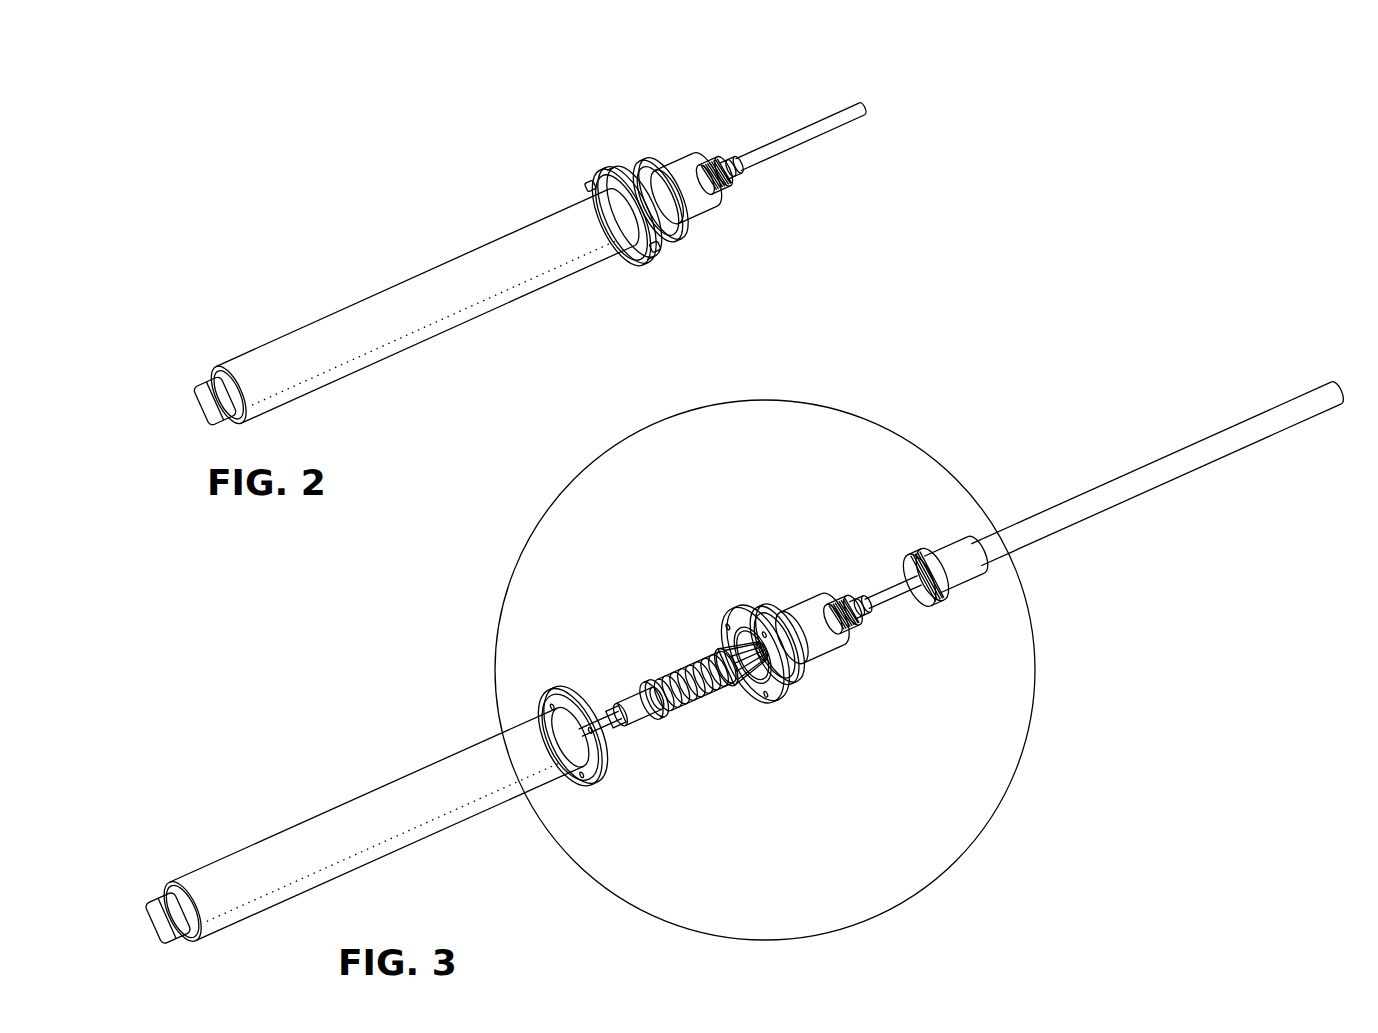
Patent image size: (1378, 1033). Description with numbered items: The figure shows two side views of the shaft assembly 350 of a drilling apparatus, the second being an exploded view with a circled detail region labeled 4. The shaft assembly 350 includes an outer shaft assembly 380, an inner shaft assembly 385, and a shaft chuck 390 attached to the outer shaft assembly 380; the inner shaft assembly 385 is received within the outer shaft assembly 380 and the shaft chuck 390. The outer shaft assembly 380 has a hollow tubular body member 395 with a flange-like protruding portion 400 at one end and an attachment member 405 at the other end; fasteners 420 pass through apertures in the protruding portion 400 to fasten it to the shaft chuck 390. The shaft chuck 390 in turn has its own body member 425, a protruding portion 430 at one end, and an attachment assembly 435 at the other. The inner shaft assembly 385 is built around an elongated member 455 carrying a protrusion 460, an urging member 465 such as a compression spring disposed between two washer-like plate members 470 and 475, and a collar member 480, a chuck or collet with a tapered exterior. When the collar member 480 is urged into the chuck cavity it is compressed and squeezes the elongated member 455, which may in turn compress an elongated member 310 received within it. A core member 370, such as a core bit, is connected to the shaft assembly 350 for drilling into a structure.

In FIG. 3, the detail view circle (FIG. 4) 4 is at (1037, 643).
In FIG. 3, the elongated member 310 is at (620, 730).
In FIG. 2, the shaft assembly 350 is at (495, 242).
In FIG. 3, the shaft assembly 350 is at (746, 659).
In FIG. 3, the core member 370 is at (1157, 453).
In FIG. 2, the outer shaft assembly 380 is at (430, 258).
In FIG. 3, the outer shaft assembly 380 is at (308, 815).
In FIG. 2, the inner shaft assembly 385 is at (797, 113).
In FIG. 3, the inner shaft assembly 385 is at (815, 635).
In FIG. 2, the shaft chuck 390 is at (664, 147).
In FIG. 3, the shaft chuck 390 is at (838, 665).
In FIG. 2, the body member 395 is at (433, 325).
In FIG. 3, the body member 395 is at (408, 790).
In FIG. 2, the protruding portion 400 is at (618, 262).
In FIG. 3, the protruding portion 400 is at (598, 782).
In FIG. 2, the attachment member 405 is at (200, 405).
In FIG. 2, the fasteners 420 is at (594, 185).
In FIG. 2, the body member 425 is at (676, 236).
In FIG. 3, the body member 425 is at (768, 608).
In FIG. 2, the protruding portion 430 is at (655, 262).
In FIG. 3, the protruding portion 430 is at (785, 695).
In FIG. 2, the attachment assembly 435 is at (713, 222).
In FIG. 3, the attachment assembly 435 is at (833, 598).
In FIG. 3, the elongated member 455 is at (898, 600).
In FIG. 3, the protrusion 460 is at (652, 726).
In FIG. 3, the urging member 465 is at (672, 670).
In FIG. 3, the plate member 470 is at (640, 685).
In FIG. 3, the plate member 475 is at (740, 690).
In FIG. 3, the collar member 480 is at (725, 645).